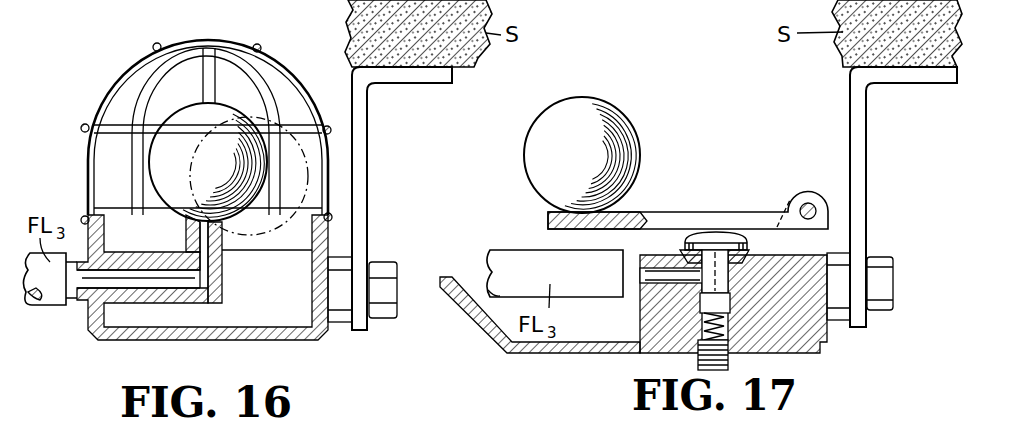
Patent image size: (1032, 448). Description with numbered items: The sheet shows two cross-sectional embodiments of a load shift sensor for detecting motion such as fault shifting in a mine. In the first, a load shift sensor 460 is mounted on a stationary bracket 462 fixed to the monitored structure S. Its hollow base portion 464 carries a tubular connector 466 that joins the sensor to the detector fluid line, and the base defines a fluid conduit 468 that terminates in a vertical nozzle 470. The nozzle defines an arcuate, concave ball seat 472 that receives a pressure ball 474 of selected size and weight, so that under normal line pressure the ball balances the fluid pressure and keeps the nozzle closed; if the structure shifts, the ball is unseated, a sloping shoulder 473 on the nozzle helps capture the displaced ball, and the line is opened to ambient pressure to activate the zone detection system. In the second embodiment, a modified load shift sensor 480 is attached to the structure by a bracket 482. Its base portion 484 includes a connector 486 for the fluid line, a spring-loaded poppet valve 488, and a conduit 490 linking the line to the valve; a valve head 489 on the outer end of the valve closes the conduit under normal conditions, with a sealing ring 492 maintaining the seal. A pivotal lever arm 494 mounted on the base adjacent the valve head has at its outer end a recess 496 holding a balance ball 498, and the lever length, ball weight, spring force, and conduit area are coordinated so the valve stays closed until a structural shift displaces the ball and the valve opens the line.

In FIG. 16, the load shift sensor 460 is at (223, 36).
In FIG. 16, the stationary bracket 462 is at (366, 144).
In FIG. 16, the hollow base portion 464 is at (235, 338).
In FIG. 16, the tubular connector 466 is at (72, 303).
In FIG. 16, the fluid conduit 468 is at (150, 300).
In FIG. 16, the vertical nozzle 470 is at (229, 240).
In FIG. 16, the ball seat 472 is at (190, 238).
In FIG. 16, the sloping shoulder 473 is at (224, 226).
In FIG. 16, the pressure ball 474 is at (195, 158).
In FIG. 17, the modified load shift sensor 480 is at (655, 136).
In FIG. 17, the bracket 482 is at (862, 162).
In FIG. 17, the base portion 484 is at (827, 327).
In FIG. 17, the connector 486 is at (630, 287).
In FIG. 17, the spring-loaded poppet valve 488 is at (723, 302).
In FIG. 17, the valve head 489 is at (718, 235).
In FIG. 17, the conduit 490 is at (673, 277).
In FIG. 17, the sealing ring 492 is at (780, 246).
In FIG. 17, the pivotal lever arm 494 is at (663, 212).
In FIG. 17, the recess 496 is at (547, 223).
In FIG. 17, the balance ball 498 is at (600, 155).